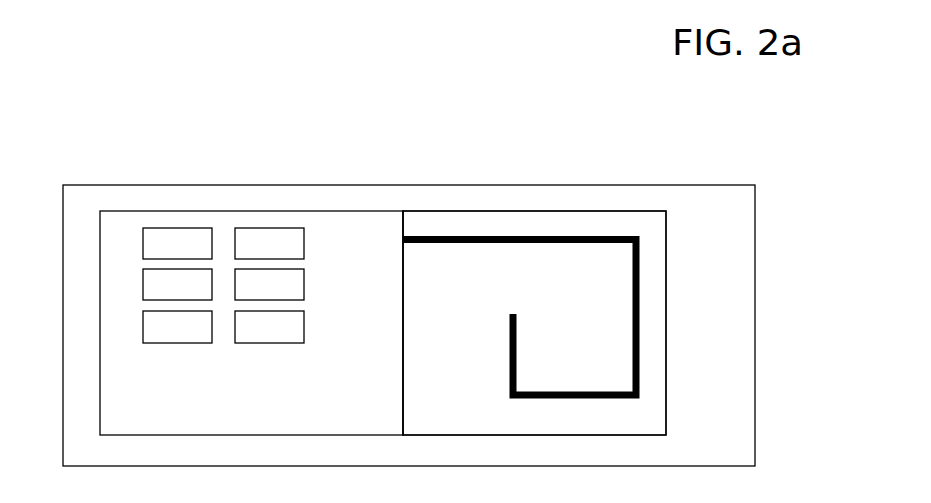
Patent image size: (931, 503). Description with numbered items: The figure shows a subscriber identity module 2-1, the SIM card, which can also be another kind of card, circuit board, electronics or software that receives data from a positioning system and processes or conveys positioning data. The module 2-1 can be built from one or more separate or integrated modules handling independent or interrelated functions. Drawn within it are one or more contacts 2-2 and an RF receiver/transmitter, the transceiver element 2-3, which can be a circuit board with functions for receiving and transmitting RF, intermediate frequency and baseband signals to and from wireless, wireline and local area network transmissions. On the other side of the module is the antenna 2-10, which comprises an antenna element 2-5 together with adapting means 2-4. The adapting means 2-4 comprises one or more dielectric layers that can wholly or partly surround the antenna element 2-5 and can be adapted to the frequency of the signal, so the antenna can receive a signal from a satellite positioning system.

The subscriber identity module 2-1 is at (303, 185).
The contacts 2-2 is at (192, 237).
The transceiver element 2-3 is at (122, 237).
The adapting means 2-4 is at (440, 220).
The antenna element 2-5 is at (530, 235).
The antenna 2-10 is at (558, 112).